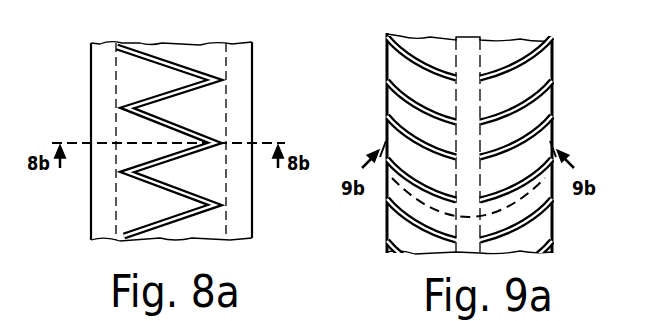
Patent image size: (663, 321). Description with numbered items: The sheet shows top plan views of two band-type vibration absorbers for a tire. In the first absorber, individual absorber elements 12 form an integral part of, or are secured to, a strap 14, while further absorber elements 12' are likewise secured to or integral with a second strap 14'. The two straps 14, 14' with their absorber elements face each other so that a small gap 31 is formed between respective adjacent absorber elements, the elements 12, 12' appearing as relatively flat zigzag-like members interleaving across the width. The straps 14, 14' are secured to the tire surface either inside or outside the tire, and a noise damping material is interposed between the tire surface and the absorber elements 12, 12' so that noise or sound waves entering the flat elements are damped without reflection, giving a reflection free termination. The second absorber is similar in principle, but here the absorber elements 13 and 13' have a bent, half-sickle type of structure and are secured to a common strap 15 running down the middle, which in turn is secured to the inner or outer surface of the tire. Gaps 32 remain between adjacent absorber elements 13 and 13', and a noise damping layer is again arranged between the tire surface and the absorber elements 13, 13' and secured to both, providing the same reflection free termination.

In FIG. 8A, the absorber element 12 is at (76, 143).
In FIG. 8A, the absorber element 12' is at (227, 143).
In FIG. 8A, the strap 14 is at (73, 141).
In FIG. 8A, the strap 14' is at (268, 140).
In FIG. 8A, the gap 31 is at (168, 56).
In FIG. 9A, the absorber element 13 is at (373, 143).
In FIG. 9A, the absorber element 13' is at (582, 147).
In FIG. 9A, the common strap 15 is at (468, 50).
In FIG. 9A, the gap 32 is at (392, 114).